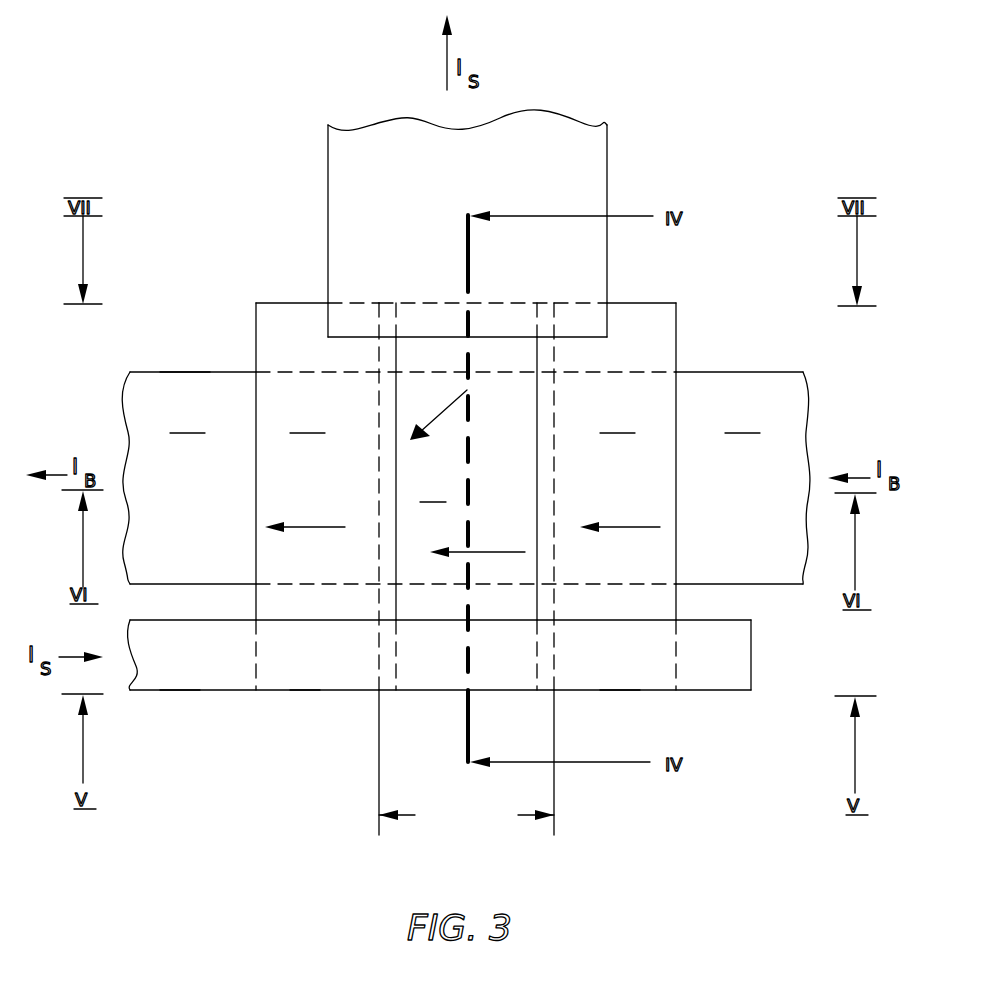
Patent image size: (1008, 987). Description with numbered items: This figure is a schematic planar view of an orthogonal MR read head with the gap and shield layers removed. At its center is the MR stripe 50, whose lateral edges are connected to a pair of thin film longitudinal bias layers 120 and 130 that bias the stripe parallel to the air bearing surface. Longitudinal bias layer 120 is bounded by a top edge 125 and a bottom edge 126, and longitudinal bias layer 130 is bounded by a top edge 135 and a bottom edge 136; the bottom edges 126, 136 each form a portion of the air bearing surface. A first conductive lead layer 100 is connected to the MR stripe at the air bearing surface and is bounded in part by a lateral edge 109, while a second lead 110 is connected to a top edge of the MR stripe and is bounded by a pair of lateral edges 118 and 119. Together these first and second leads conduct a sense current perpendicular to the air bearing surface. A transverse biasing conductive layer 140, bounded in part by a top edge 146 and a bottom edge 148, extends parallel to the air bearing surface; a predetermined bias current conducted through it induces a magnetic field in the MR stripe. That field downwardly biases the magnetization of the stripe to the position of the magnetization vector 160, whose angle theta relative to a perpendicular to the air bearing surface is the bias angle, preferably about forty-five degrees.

The MR stripe 50 is at (466, 569).
The first conductive lead layer 100 is at (325, 667).
The lateral edge 109 is at (751, 660).
The second lead 110 is at (562, 173).
The lateral edge 118 is at (607, 185).
The lateral edge 119 is at (328, 180).
The longitudinal bias layer 120 is at (606, 496).
The top edge 125 is at (648, 303).
The bottom edge 126 is at (620, 690).
The longitudinal bias layer 130 is at (326, 496).
The top edge 135 is at (293, 303).
The bottom edge 136 is at (305, 690).
The transverse biasing conductive layer 140 is at (466, 478).
The top edge 146 is at (186, 372).
The bottom edge 148 is at (180, 690).
The magnetization vector 160 is at (440, 412).